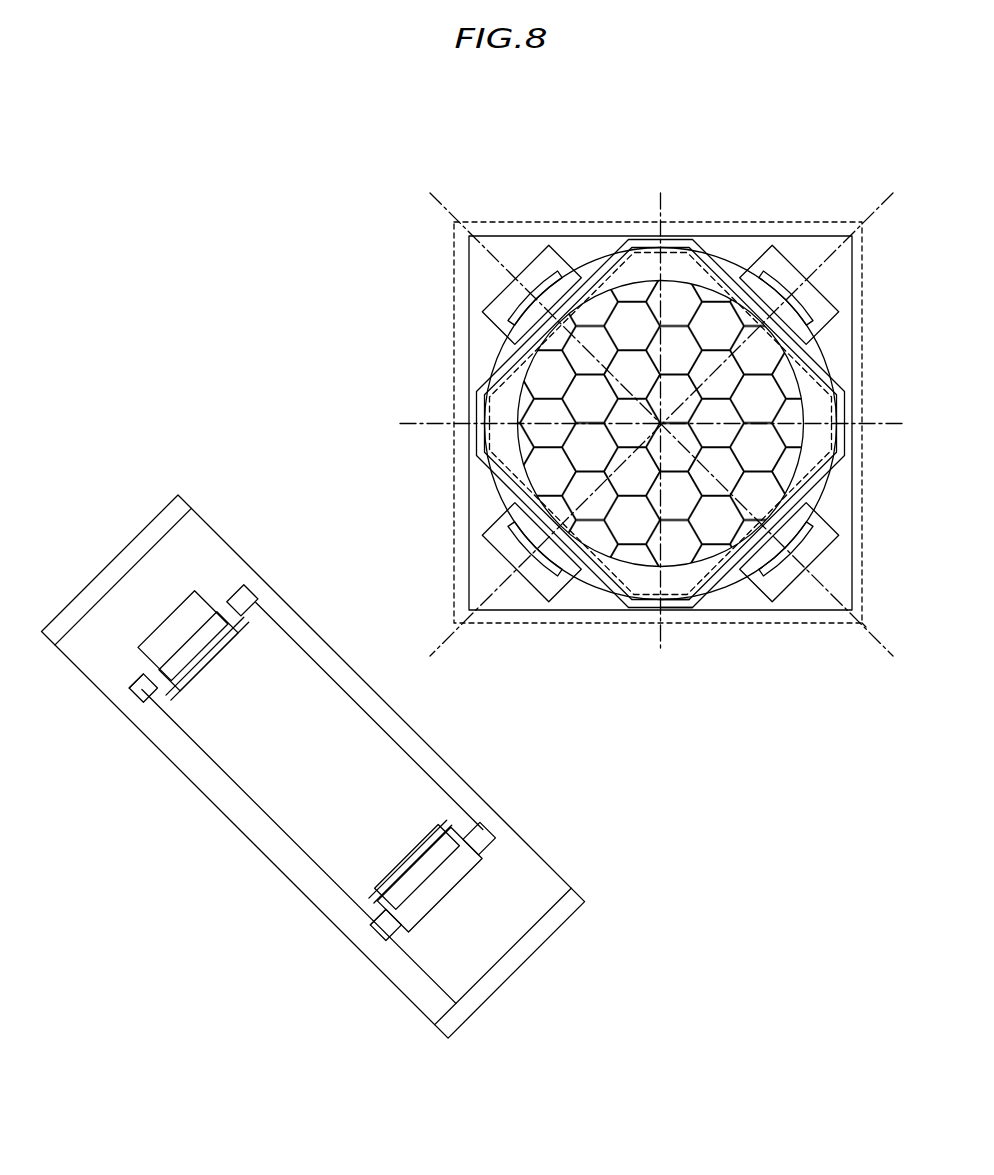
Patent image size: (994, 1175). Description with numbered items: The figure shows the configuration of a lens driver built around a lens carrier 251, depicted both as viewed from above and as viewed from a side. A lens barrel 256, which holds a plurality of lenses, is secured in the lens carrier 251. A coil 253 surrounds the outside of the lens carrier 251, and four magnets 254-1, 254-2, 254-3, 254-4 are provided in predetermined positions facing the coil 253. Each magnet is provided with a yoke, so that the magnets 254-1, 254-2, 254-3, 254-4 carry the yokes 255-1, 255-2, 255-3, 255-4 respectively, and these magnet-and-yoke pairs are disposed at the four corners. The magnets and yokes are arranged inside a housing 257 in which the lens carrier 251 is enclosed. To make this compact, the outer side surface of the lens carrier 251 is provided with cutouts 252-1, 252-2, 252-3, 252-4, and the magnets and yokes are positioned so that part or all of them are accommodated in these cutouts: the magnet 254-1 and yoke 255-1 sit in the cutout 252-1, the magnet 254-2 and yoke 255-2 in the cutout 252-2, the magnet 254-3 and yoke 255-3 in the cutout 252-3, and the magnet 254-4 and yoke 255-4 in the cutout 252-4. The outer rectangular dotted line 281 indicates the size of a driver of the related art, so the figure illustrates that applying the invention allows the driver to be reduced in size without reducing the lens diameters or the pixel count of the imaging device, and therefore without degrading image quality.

The lens carrier 251 is at (660, 612).
The cutout 252-1 is at (820, 492).
The cutout 252-2 is at (495, 492).
The cutout 252-3 is at (596, 250).
The cutout 252-4 is at (730, 255).
The coil 253 is at (684, 580).
The magnet 254-1 is at (757, 565).
The magnet 254-2 is at (563, 563).
The magnet 254-3 is at (500, 336).
The magnet 254-4 is at (750, 280).
The yoke 255-1 is at (792, 568).
The yoke 255-2 is at (533, 577).
The yoke 255-3 is at (497, 300).
The yoke 255-4 is at (795, 268).
The lens barrel 256 is at (768, 448).
The housing 257 is at (862, 334).
The outer rectangular dotted line 281 is at (864, 623).